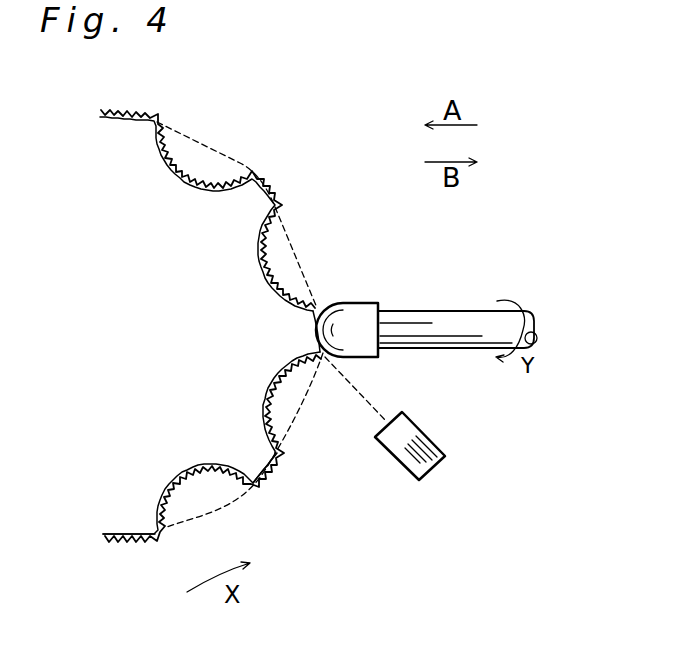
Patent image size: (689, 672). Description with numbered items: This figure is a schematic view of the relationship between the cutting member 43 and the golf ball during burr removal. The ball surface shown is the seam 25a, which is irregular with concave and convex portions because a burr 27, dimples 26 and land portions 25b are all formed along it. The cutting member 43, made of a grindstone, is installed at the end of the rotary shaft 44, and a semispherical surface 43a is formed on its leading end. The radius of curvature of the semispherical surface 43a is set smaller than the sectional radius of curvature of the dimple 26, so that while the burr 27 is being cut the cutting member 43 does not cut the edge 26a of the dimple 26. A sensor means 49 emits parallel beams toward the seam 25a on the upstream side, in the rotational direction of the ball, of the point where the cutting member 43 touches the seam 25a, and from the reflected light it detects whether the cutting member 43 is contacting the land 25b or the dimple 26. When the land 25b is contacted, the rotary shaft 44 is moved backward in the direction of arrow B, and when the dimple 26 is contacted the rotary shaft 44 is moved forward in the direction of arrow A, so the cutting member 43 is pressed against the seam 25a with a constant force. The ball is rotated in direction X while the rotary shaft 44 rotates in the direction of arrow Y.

The seam 25a is at (133, 532).
The land portion 25b is at (314, 328).
The dimple 26 is at (260, 388).
The edge of the dimple 26a is at (312, 318).
The burr 27 is at (263, 487).
The cutting member 43 is at (360, 303).
The semispherical surface 43a is at (332, 303).
The rotary shaft 44 is at (467, 310).
The sensor means 49 is at (438, 447).